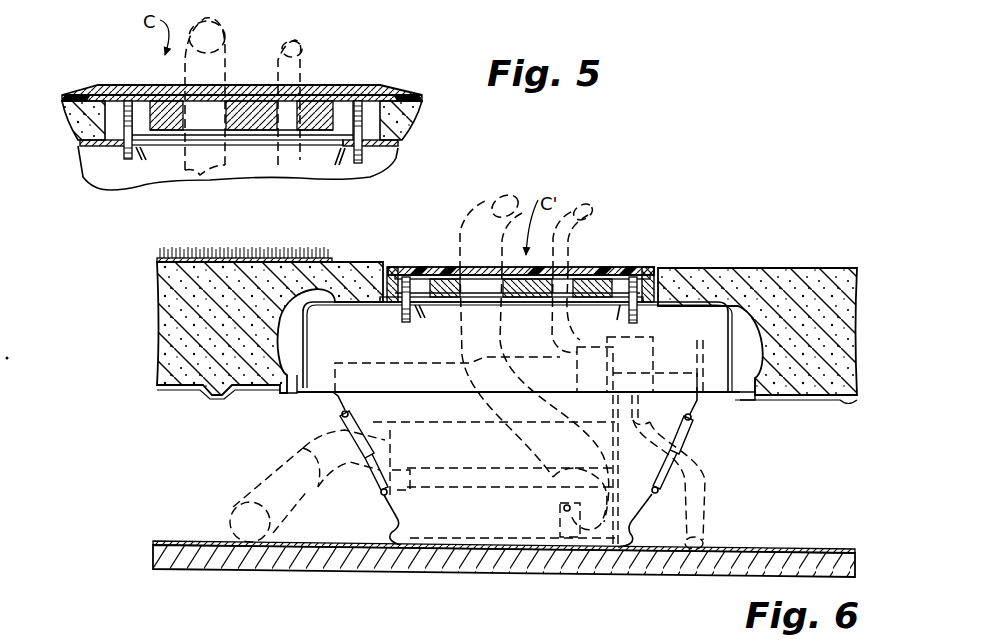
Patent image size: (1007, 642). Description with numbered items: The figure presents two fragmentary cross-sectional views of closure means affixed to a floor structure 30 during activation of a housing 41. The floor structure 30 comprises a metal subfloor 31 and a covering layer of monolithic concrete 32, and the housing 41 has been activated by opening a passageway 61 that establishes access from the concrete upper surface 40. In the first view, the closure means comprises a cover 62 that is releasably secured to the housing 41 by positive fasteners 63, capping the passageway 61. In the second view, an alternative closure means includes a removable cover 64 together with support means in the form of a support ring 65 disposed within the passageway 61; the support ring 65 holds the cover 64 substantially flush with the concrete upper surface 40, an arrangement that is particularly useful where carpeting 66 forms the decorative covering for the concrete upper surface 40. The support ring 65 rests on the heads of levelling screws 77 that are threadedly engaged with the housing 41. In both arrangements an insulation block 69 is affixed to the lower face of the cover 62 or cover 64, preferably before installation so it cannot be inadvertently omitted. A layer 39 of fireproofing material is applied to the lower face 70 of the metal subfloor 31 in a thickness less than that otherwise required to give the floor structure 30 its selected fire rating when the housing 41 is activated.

In FIG. 5, the floor structure 30 is at (395, 80).
In FIG. 6, the floor structure 30 is at (712, 246).
In FIG. 6, the metal subfloor 31 is at (469, 549).
In FIG. 6, the monolithic concrete 32 is at (158, 300).
In FIG. 6, the layer of fireproofing material 39 is at (178, 565).
In FIG. 6, the concrete upper surface 40 is at (805, 268).
In FIG. 5, the housing 41 is at (400, 158).
In FIG. 6, the housing 41 is at (348, 300).
In FIG. 5, the passageway 61 is at (105, 141).
In FIG. 6, the passageway 61 is at (388, 306).
In FIG. 5, the cover 62 is at (318, 100).
In FIG. 5, the positive fasteners 63 is at (128, 165).
In FIG. 6, the removable cover 64 is at (590, 272).
In FIG. 6, the support ring 65 is at (650, 268).
In FIG. 6, the carpeting 66 is at (275, 258).
In FIG. 5, the insulation block 69 is at (250, 100).
In FIG. 6, the insulation block 69 is at (456, 268).
In FIG. 6, the lower face 70 is at (153, 555).
In FIG. 6, the levelling screws 77 is at (405, 320).